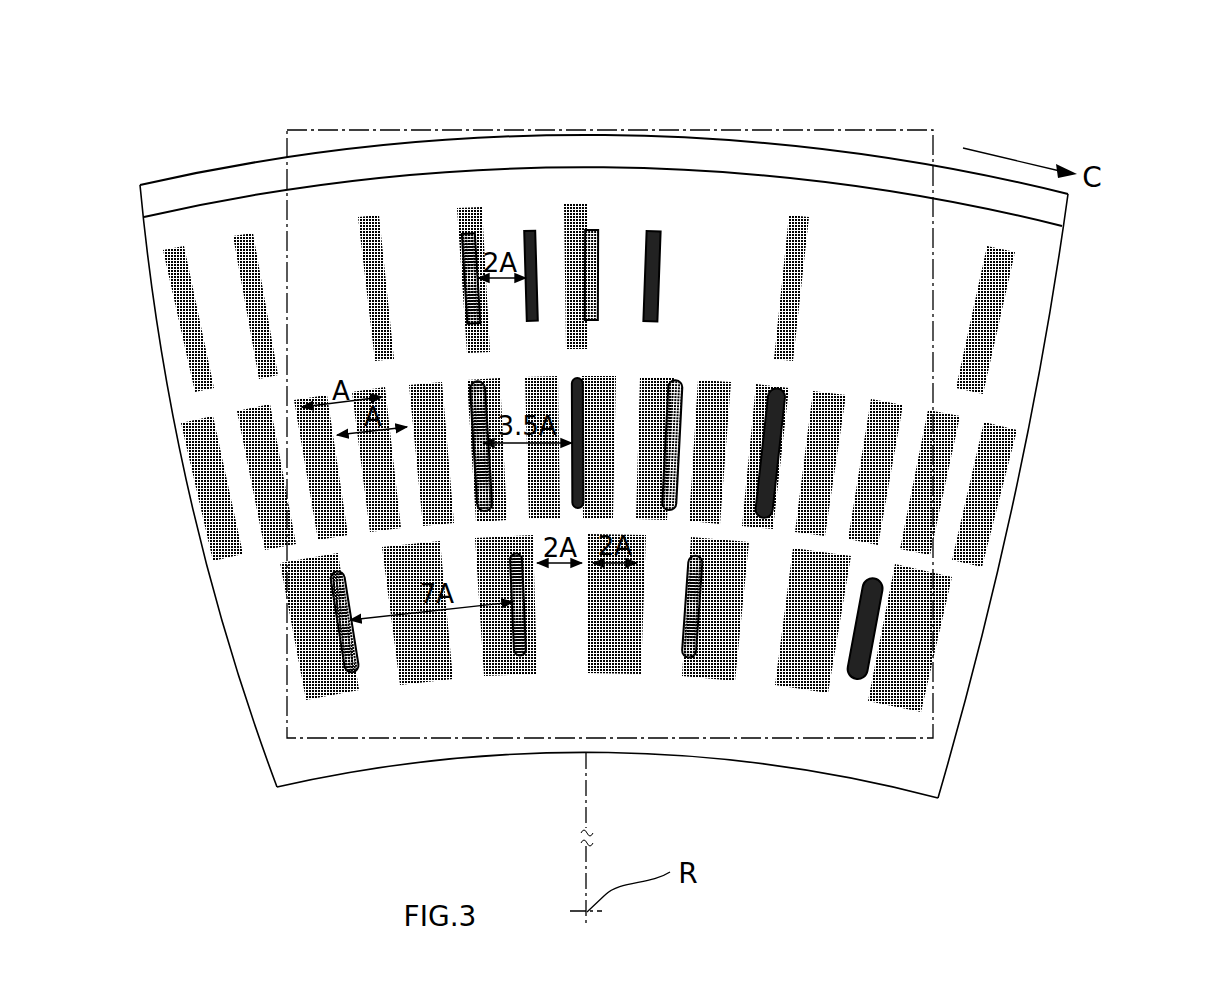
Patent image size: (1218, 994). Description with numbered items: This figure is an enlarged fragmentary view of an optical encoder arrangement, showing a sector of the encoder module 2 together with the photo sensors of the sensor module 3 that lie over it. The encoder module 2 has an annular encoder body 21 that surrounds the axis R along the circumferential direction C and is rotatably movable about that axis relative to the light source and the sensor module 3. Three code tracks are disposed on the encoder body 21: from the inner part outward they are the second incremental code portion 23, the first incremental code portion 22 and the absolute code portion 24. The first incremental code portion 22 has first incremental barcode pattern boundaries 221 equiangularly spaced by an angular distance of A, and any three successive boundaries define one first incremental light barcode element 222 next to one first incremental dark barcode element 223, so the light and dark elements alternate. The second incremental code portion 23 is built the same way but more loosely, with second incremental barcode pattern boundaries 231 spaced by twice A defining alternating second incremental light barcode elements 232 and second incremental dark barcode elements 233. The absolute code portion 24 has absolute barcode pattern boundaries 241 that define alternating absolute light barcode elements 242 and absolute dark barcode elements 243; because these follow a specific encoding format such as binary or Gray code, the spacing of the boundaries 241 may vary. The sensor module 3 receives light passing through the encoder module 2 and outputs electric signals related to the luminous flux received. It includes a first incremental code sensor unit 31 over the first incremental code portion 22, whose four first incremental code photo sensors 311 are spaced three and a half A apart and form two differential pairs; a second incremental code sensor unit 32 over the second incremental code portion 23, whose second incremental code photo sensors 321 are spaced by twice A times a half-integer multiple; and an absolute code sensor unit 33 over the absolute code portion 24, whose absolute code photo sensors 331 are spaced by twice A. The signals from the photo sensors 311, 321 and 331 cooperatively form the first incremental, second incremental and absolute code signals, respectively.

The encoder module 2 is at (1066, 396).
The sensor module 3 is at (505, 126).
The encoder body 21 is at (288, 753).
The first incremental code portion 22 is at (980, 515).
The second incremental code portion 23 is at (917, 622).
The absolute code portion 24 is at (987, 327).
The first incremental code sensor unit 31 is at (681, 392).
The second incremental code sensor unit 32 is at (355, 672).
The absolute code sensor unit 33 is at (597, 272).
The first incremental barcode pattern boundaries 221 is at (243, 420).
The first incremental light barcode elements 222 is at (238, 453).
The first incremental dark barcode elements 223 is at (210, 498).
The second incremental barcode pattern boundaries 231 is at (848, 640).
The second incremental light barcode elements 232 is at (752, 613).
The second incremental dark barcode elements 233 is at (807, 612).
The absolute barcode pattern boundaries 241 is at (200, 313).
The absolute light barcode elements 242 is at (230, 348).
The absolute dark barcode elements 243 is at (182, 277).
The first incremental code photo sensors 311 is at (785, 390).
The second incremental code photo sensors 321 is at (528, 648).
The absolute code photo sensors 331 is at (661, 273).